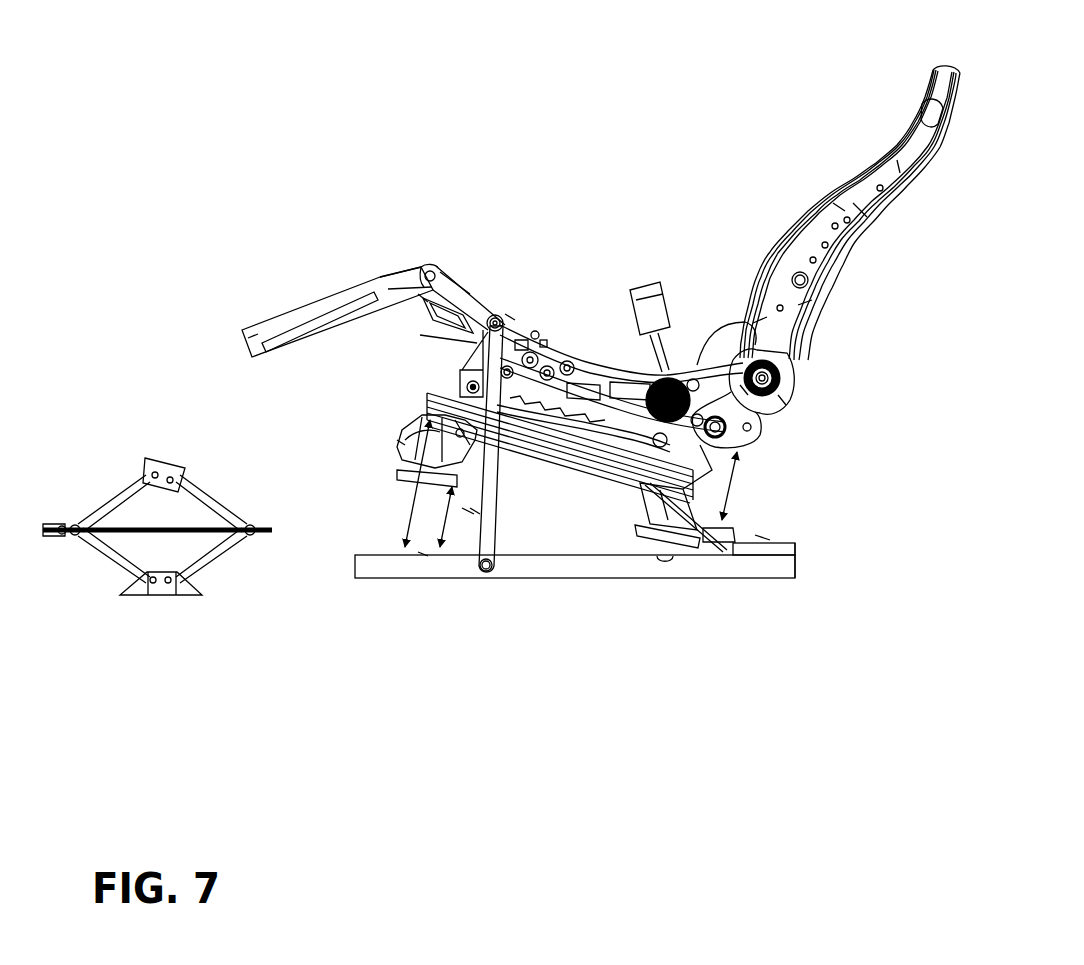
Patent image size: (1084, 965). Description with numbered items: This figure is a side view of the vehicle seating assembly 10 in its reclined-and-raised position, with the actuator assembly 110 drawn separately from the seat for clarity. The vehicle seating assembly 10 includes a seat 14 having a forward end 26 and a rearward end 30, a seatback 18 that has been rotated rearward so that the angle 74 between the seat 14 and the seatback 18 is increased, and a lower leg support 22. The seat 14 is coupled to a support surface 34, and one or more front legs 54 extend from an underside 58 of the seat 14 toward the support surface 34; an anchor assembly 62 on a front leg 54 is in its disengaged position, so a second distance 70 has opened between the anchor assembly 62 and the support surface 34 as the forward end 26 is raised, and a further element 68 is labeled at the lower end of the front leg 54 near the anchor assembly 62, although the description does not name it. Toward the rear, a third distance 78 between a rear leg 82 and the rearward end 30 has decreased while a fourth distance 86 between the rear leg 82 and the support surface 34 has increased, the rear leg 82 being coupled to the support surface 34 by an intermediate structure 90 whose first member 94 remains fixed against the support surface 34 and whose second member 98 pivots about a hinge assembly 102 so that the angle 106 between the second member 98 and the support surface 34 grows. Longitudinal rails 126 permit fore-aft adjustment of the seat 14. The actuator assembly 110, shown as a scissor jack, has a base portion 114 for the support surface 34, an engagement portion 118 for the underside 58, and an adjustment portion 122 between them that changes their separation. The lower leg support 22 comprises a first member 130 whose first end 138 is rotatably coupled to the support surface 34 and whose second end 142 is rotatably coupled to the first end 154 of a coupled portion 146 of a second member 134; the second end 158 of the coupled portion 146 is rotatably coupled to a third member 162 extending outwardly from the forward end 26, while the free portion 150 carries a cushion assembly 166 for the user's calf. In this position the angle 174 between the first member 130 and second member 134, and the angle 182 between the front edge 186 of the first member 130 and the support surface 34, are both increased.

The vehicle seating assembly 10 is at (452, 82).
The seat 14 is at (613, 353).
The seatback 18 is at (832, 195).
The lower leg support 22 is at (307, 297).
The forward end 26 is at (440, 327).
The rearward end 30 is at (760, 432).
The support surface 34 is at (590, 582).
The front leg 54 is at (410, 443).
The underside 58 is at (603, 465).
The anchor assembly 62 is at (398, 482).
The front foot plate 68 is at (405, 490).
The second distance 70 is at (422, 557).
The angle 74 is at (700, 370).
The third distance 78 is at (742, 485).
The rear leg 82 is at (735, 545).
The fourth distance 86 is at (705, 558).
The intermediate structure 90 is at (800, 535).
The first member 94 is at (797, 550).
The second member 98 is at (656, 532).
The hinge assembly 102 is at (765, 530).
The angle 106 is at (668, 560).
The actuator assembly 110 is at (93, 598).
The base portion 114 is at (170, 600).
The engagement portion 118 is at (157, 453).
The adjustment portion 122 is at (100, 495).
The longitudinal rails 126 is at (578, 460).
The first member 130 is at (497, 507).
The second member 134 is at (451, 266).
The first end 138 is at (483, 575).
The second end 142 is at (512, 312).
The coupled portion 146 is at (488, 310).
The free portion 150 is at (393, 283).
The first end 154 is at (503, 312).
The second end 158 is at (430, 265).
The third member 162 is at (423, 299).
The cushion assembly 166 is at (268, 318).
The angle 174 is at (477, 333).
The angle 182 is at (475, 512).
The front edge 186 is at (468, 512).